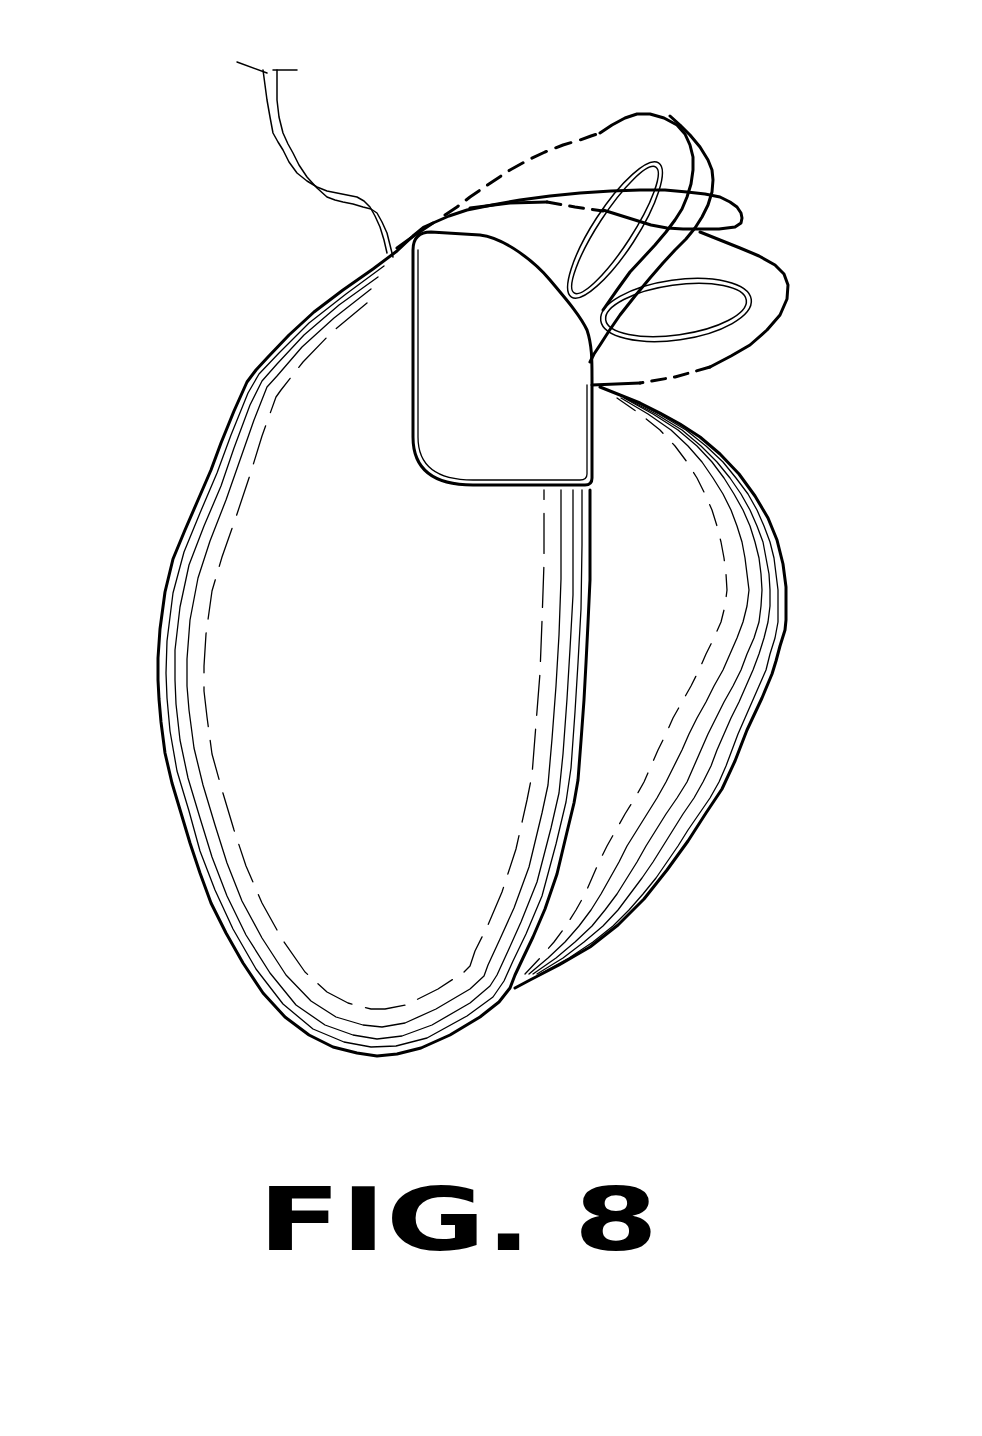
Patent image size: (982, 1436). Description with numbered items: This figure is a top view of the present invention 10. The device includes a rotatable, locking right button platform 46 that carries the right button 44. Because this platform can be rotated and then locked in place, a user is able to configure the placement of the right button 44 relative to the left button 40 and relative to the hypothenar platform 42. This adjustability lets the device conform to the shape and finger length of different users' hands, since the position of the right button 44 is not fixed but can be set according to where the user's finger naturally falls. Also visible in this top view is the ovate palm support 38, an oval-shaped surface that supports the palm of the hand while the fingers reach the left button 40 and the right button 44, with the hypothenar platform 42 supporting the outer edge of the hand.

The present invention 10 is at (198, 868).
The ovate palm support 38 is at (380, 615).
The left button 40 is at (475, 258).
The hypothenar platform 42 is at (677, 678).
The right button 44 is at (750, 243).
The rotatable, locking right button platform 46 is at (670, 116).